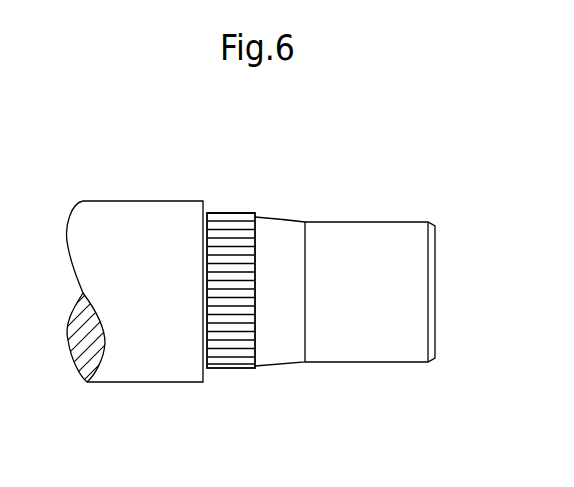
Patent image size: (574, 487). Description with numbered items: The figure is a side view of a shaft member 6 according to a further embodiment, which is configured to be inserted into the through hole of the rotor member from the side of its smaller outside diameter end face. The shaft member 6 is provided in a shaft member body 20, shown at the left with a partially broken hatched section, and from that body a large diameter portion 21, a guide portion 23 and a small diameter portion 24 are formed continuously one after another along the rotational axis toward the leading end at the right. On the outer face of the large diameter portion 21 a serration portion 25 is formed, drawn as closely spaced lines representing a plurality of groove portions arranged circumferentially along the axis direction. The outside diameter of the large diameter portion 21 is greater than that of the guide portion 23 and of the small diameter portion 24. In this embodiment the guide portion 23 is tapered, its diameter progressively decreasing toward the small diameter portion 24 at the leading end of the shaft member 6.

The shaft member 6 is at (313, 205).
The shaft member body 20 is at (138, 373).
The large diameter portion 21 is at (227, 368).
The guide portion 23 is at (278, 366).
The small diameter portion 24 is at (328, 363).
The serration portion 25 is at (242, 221).